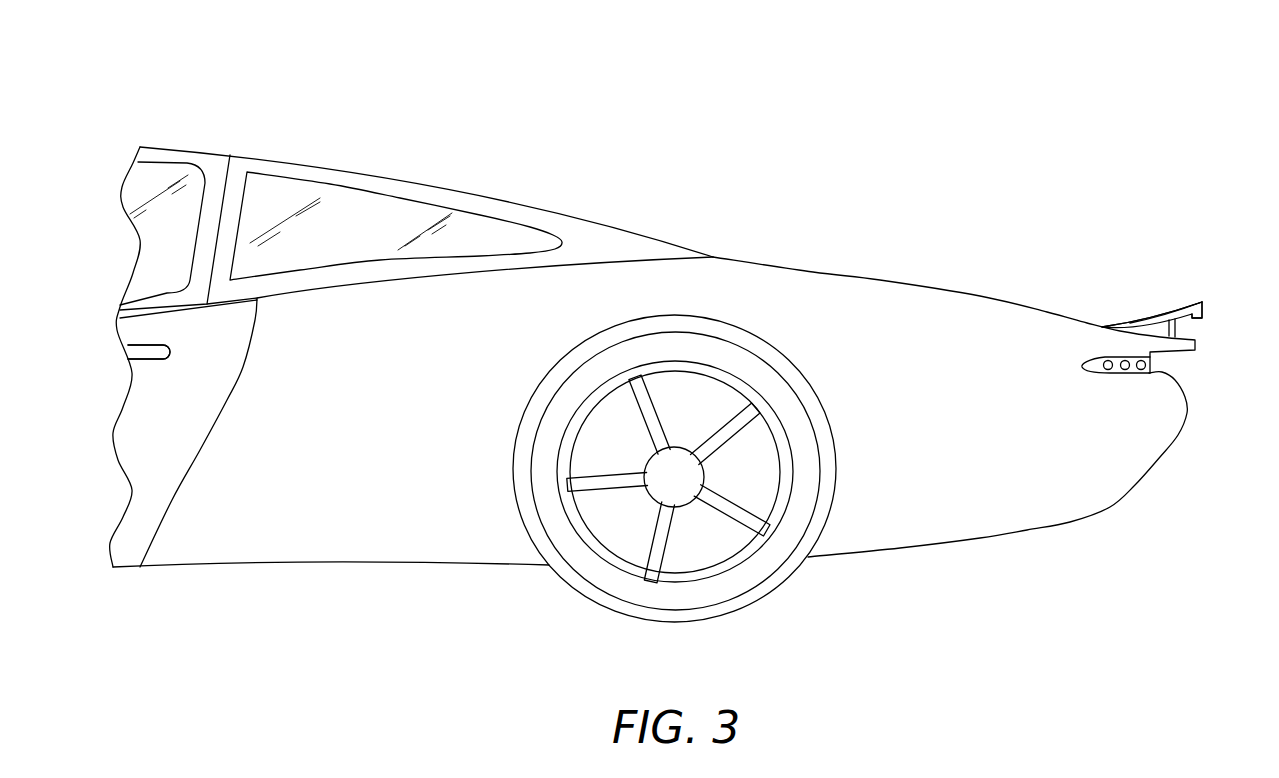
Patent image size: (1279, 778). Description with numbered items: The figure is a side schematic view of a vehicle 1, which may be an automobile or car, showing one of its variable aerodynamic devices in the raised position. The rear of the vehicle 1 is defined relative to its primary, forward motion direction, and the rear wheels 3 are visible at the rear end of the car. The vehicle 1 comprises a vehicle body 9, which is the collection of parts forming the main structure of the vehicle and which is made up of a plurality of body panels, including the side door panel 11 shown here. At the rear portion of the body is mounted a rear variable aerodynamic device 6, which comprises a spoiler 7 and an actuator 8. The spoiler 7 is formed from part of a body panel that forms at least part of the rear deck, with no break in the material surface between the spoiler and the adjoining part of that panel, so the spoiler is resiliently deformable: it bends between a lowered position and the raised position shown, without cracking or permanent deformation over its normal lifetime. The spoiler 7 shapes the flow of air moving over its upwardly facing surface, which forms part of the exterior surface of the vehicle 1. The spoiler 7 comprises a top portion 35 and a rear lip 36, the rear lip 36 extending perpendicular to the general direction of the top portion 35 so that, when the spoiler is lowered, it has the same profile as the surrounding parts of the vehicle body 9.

The vehicle 1 is at (163, 75).
The rear wheels 3 is at (678, 612).
The rear variable aerodynamic device (VAD) 6 is at (1133, 318).
The spoiler 7 is at (1185, 302).
The actuator 8 is at (1179, 326).
The vehicle body 9 is at (139, 447).
The side door panel 11 is at (138, 401).
The top portion 35 is at (1161, 312).
The rear lip 36 is at (1203, 310).